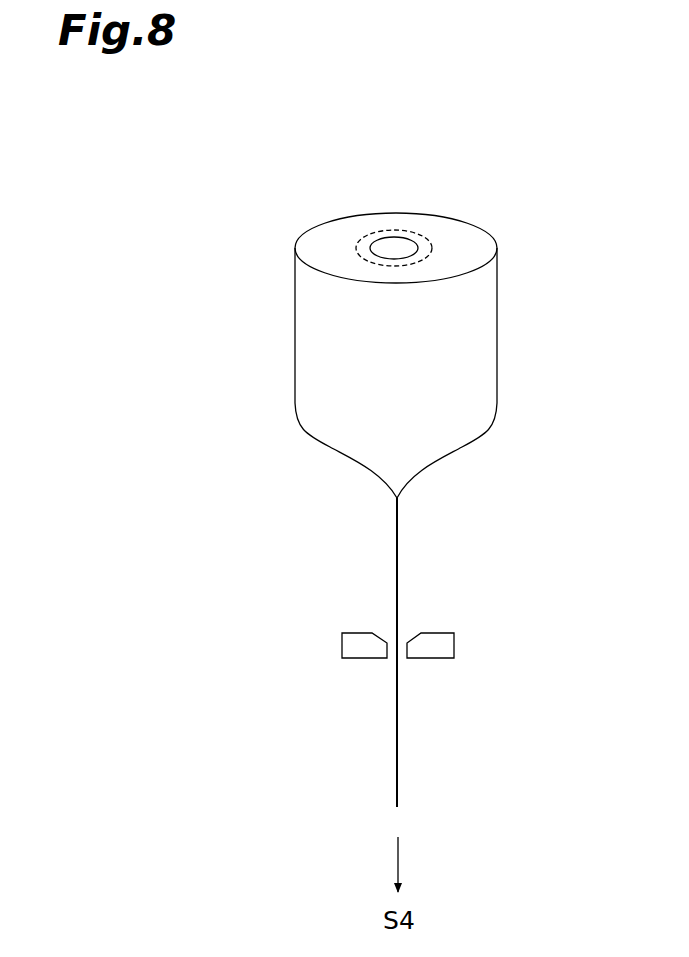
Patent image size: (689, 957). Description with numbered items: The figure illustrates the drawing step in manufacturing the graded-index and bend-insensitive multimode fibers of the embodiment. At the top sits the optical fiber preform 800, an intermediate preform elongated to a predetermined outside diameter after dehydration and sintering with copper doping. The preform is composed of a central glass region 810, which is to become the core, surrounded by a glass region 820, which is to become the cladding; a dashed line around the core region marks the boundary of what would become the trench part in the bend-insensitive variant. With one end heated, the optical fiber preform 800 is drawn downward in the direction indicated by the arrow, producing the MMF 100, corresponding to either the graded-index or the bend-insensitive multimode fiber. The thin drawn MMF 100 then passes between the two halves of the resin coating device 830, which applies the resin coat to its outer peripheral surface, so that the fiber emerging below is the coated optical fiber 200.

The optical fiber preform 800 is at (499, 329).
The glass region to become the core 810 is at (394, 247).
The glass region to become the cladding 820 is at (466, 243).
The MMF 100 is at (400, 553).
The resin coating device 830 is at (455, 645).
The coated optical fiber 200 is at (400, 738).